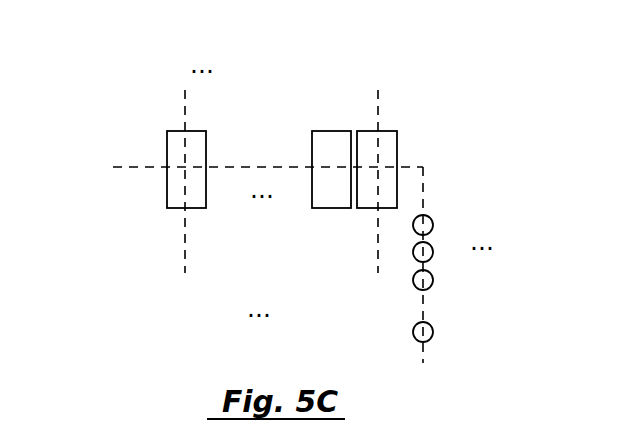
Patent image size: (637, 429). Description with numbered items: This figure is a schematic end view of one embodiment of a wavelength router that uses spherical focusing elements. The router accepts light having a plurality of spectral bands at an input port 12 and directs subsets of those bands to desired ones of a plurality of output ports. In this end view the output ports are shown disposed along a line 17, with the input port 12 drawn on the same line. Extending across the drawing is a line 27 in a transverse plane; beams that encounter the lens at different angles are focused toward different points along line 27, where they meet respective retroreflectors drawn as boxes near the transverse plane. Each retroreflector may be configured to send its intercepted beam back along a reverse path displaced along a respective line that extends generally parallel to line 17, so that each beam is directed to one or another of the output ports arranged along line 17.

The input port 12 is at (433, 326).
The line 17 is at (425, 193).
The line 27 is at (122, 167).